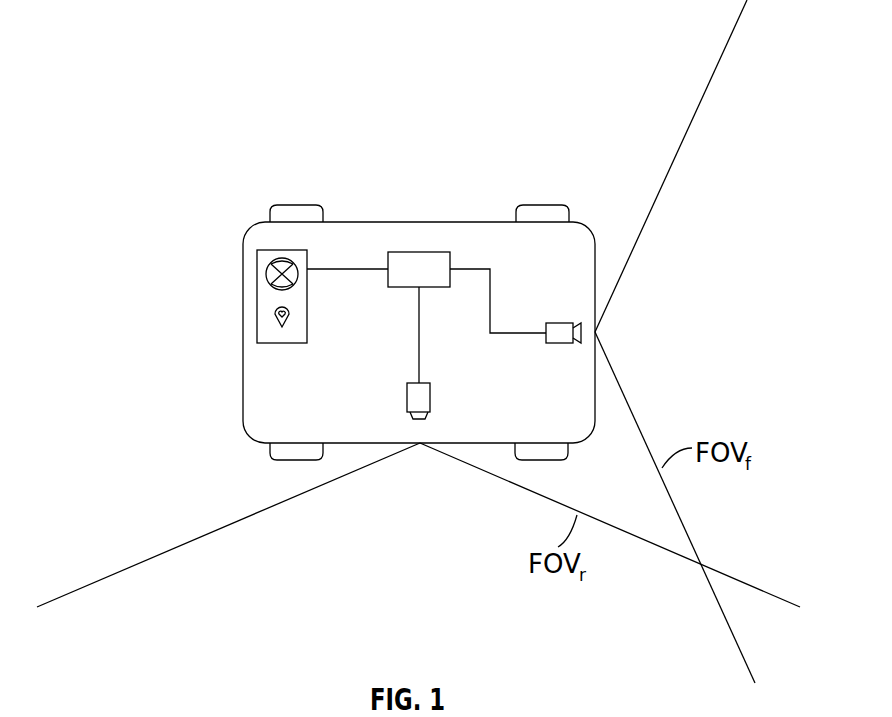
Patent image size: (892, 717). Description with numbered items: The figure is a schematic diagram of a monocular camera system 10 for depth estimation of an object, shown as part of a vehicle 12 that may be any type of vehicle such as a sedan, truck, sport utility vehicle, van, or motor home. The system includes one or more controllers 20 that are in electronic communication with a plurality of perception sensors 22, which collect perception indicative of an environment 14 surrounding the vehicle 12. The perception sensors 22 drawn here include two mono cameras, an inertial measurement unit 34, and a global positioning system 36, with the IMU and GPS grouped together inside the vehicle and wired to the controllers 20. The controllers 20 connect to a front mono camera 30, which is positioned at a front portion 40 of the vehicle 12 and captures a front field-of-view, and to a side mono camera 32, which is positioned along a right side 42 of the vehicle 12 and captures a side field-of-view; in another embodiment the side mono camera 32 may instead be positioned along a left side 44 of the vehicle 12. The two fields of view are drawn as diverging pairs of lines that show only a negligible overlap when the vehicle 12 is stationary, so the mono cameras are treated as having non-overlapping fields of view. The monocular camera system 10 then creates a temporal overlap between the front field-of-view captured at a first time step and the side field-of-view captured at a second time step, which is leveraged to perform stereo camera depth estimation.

The monocular camera system 10 is at (490, 234).
The vehicle 12 is at (243, 288).
The environment 14 is at (748, 160).
The controllers 20 is at (419, 258).
The perception sensors 22 is at (283, 344).
The front mono camera 30 is at (556, 323).
The side mono camera 32 is at (432, 385).
The inertial measurement unit 34 is at (268, 262).
The global positioning system 36 is at (292, 313).
The front portion 40 is at (600, 403).
The right side 42 is at (352, 454).
The left side 44 is at (346, 212).